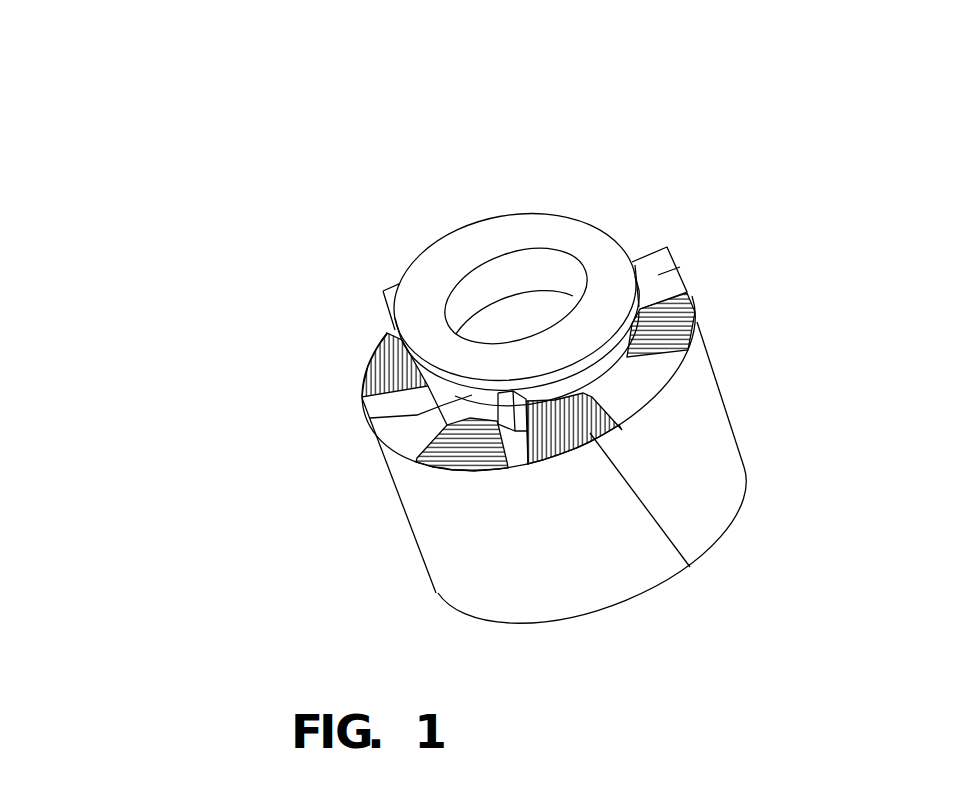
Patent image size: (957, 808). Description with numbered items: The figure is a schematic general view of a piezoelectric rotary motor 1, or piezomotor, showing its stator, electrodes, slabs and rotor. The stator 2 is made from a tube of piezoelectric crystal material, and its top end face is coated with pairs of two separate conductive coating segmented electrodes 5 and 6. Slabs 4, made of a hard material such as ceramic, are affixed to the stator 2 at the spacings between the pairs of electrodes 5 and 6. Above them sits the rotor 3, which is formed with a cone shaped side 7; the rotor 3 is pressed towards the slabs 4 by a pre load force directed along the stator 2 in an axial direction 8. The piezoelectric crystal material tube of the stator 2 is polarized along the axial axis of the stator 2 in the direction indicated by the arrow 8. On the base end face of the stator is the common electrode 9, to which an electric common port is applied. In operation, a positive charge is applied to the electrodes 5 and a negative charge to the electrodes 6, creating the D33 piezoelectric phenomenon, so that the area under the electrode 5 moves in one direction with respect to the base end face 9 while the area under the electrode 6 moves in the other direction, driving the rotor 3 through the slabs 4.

The piezoelectric rotary motor 1 is at (177, 190).
The stator 2 is at (632, 528).
The rotor 3 is at (592, 233).
The slabs 4 is at (667, 265).
The electrodes 5 is at (690, 567).
The electrodes 6 is at (433, 462).
The cone shaped side 7 is at (487, 393).
The axial direction 8 is at (466, 218).
The base end face common electrode 9 is at (623, 608).